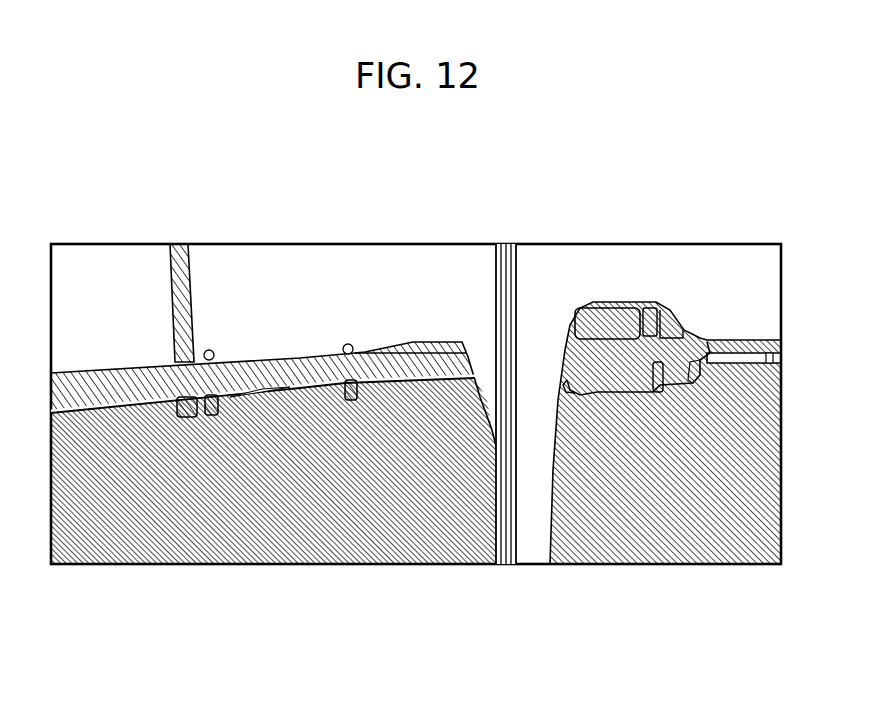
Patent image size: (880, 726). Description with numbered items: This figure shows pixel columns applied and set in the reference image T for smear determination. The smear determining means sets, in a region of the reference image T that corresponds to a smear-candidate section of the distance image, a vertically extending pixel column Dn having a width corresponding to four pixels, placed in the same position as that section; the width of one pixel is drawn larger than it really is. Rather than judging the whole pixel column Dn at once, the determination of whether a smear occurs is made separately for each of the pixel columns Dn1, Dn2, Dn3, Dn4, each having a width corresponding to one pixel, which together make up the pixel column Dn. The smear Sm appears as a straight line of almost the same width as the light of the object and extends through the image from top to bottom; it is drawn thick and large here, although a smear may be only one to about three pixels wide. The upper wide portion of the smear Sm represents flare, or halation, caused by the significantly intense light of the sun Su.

The reference image T is at (274, 419).
The pixel column Dn is at (500, 390).
The pixel column Dn1 is at (498, 244).
The pixel column Dn2 is at (503, 244).
The pixel column Dn3 is at (509, 244).
The pixel column Dn4 is at (514, 244).
The sun Su is at (546, 284).
The smear Sm is at (528, 530).